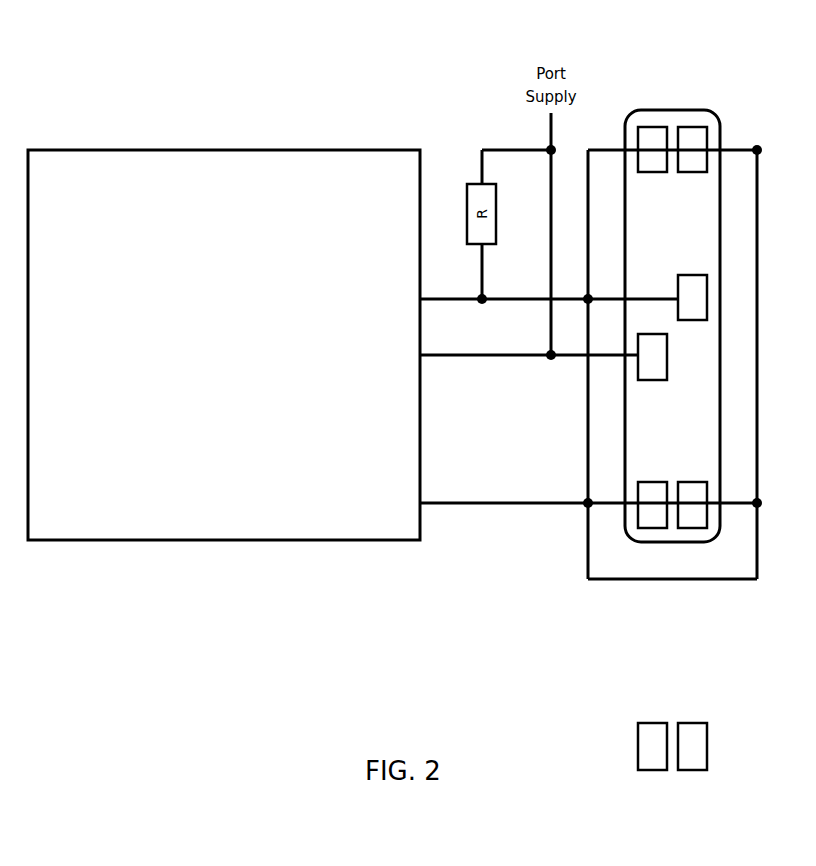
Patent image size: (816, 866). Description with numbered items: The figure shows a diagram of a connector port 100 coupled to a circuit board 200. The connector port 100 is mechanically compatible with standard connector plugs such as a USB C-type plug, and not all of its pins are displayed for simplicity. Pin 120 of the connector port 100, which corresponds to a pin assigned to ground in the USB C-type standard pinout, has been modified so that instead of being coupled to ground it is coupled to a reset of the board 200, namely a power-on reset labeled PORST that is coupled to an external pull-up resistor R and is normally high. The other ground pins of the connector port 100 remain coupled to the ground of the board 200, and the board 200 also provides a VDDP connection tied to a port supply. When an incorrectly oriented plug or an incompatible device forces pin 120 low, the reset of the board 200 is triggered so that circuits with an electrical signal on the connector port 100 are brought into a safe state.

The connector port 100 is at (679, 283).
The pin 120 is at (650, 130).
The circuit board 200 is at (224, 345).